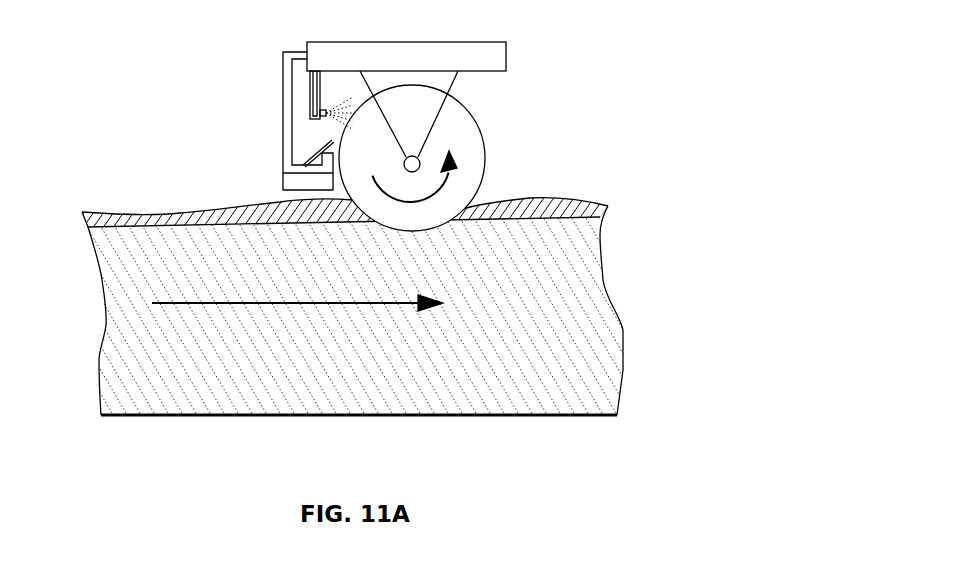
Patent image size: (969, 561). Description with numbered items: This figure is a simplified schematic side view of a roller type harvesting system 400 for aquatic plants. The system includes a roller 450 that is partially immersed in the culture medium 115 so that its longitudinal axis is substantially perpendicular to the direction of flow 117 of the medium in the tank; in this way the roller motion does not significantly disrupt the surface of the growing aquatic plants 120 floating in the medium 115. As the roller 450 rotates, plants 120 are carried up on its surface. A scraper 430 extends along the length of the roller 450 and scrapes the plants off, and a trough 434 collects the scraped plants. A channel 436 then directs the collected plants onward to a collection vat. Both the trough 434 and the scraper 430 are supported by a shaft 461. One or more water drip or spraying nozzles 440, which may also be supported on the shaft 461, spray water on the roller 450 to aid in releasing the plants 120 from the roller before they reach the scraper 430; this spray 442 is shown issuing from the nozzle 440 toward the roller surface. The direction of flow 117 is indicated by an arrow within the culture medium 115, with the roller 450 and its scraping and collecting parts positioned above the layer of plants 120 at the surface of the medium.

The harvesting system 400 is at (195, 101).
The shaft 461 is at (403, 42).
The spray 442 is at (334, 110).
The water drip or spraying nozzles 440 is at (316, 108).
The scraper 430 is at (324, 141).
The trough 434 is at (303, 165).
The channel 436 is at (283, 183).
The roller 450 is at (484, 133).
The plants 120 is at (609, 206).
The direction of flow 117 is at (190, 303).
The culture medium 115 is at (547, 338).